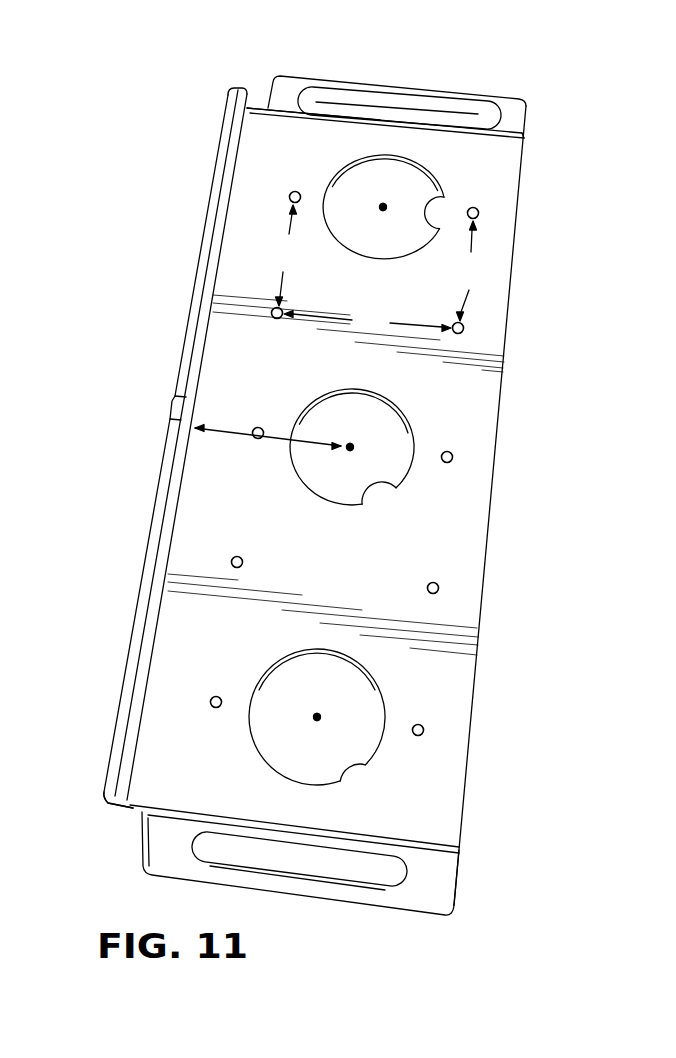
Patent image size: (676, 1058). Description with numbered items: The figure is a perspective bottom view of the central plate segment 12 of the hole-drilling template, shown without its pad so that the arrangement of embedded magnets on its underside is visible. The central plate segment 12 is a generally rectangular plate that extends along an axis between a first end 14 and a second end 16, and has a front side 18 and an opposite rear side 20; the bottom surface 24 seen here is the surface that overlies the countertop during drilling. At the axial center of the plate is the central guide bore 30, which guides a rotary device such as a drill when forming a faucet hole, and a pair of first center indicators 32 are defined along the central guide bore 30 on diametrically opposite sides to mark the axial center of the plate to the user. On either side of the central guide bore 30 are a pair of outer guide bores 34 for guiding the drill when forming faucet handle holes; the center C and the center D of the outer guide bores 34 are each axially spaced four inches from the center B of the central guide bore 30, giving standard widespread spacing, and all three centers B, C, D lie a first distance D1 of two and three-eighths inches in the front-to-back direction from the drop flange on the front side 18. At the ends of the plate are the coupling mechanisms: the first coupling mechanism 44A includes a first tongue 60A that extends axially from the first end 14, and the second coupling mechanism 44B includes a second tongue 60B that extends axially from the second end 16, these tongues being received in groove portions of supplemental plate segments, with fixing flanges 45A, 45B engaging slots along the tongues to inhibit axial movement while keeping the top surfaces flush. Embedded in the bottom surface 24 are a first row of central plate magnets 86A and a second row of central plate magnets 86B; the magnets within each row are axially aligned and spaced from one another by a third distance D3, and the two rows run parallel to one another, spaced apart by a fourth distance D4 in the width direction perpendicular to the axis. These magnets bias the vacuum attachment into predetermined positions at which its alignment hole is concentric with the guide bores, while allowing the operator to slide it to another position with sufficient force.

The central plate segment 12 is at (329, 495).
The first end 14 is at (260, 107).
The second end 16 is at (136, 814).
The front side 18 is at (508, 291).
The rear side 20 is at (203, 223).
The bottom surface 24 is at (493, 172).
The central guide bore 30 is at (398, 491).
The first center indicators 32 is at (441, 451).
The outer guide bores 34 is at (443, 195).
The first coupling mechanism 44A is at (378, 893).
The second coupling mechanism 44B is at (373, 82).
The fixing flange 45A is at (343, 870).
The fixing flange 45B is at (472, 107).
The first tongue 60A is at (439, 890).
The second tongue 60B is at (514, 125).
The first row of central plate magnets 86A is at (289, 194).
The second row of central plate magnets 86B is at (478, 210).
The center of the central guide bore B is at (353, 445).
The center of an outer guide bore C is at (383, 205).
The center of an outer guide bore D is at (320, 716).
The first distance D1 is at (246, 426).
The third distance D3 is at (379, 263).
The fourth distance D4 is at (367, 322).